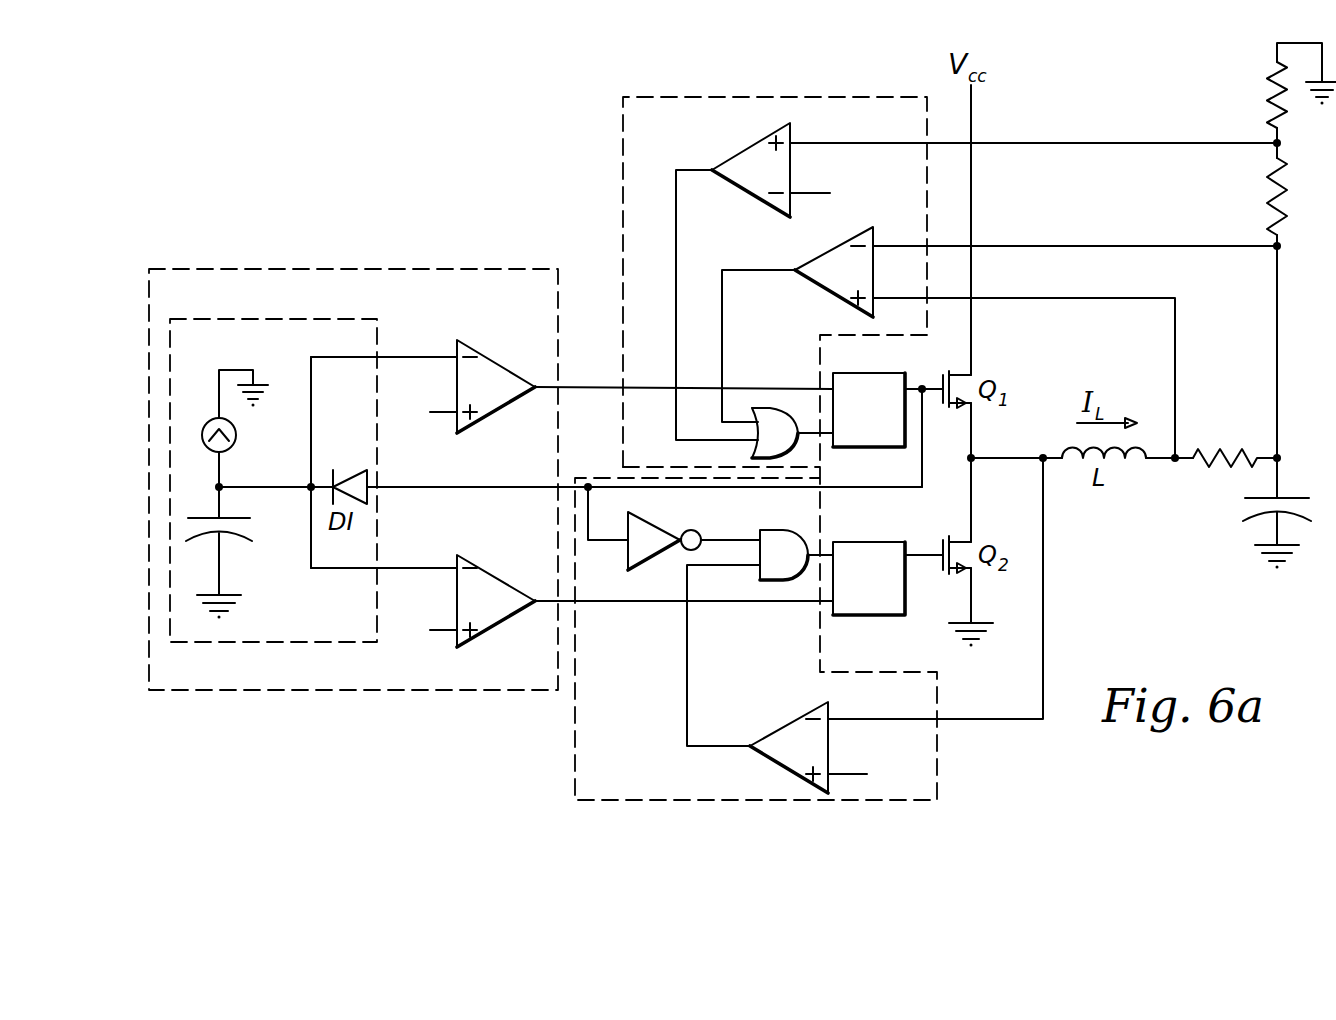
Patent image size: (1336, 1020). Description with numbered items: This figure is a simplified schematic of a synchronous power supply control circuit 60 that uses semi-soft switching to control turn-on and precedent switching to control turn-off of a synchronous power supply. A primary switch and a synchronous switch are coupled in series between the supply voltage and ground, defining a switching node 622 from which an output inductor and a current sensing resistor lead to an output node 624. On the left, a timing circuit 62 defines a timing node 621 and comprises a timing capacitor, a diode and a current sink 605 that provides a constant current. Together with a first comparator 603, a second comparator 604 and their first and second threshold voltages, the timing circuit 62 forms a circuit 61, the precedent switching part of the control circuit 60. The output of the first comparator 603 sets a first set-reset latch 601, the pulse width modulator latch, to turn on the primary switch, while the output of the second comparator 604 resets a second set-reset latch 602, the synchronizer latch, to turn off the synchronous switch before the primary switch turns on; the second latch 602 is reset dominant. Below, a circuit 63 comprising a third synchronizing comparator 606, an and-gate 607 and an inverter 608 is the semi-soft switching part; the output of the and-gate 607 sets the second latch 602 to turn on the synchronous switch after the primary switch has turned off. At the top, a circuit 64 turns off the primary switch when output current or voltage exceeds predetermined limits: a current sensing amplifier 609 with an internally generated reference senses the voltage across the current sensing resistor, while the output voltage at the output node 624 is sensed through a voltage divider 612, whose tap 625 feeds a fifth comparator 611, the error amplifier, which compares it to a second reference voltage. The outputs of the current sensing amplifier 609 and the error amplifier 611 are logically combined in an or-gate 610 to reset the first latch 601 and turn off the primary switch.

The synchronous power supply control circuit 60 is at (486, 741).
The circuit 61 is at (291, 268).
The timing circuit 62 is at (247, 318).
The circuit 63 is at (808, 803).
The circuit 64 is at (623, 265).
The first set-reset latch 601 is at (846, 447).
The second set-reset latch 602 is at (905, 643).
The first comparator 603 is at (506, 406).
The second comparator 604 is at (506, 616).
The current sink 605 is at (203, 430).
The third comparator 606 is at (786, 757).
The AND gate 607 is at (801, 538).
The inverter 608 is at (650, 521).
The current sensing amplifier 609 is at (822, 286).
The OR gate 610 is at (797, 420).
The fifth comparator 611 is at (752, 188).
The voltage divider 612 is at (1186, 201).
The timing node 621 is at (222, 485).
The switching node 622 is at (975, 455).
The output node 624 is at (1274, 455).
The feedback divider node 625 is at (1275, 148).